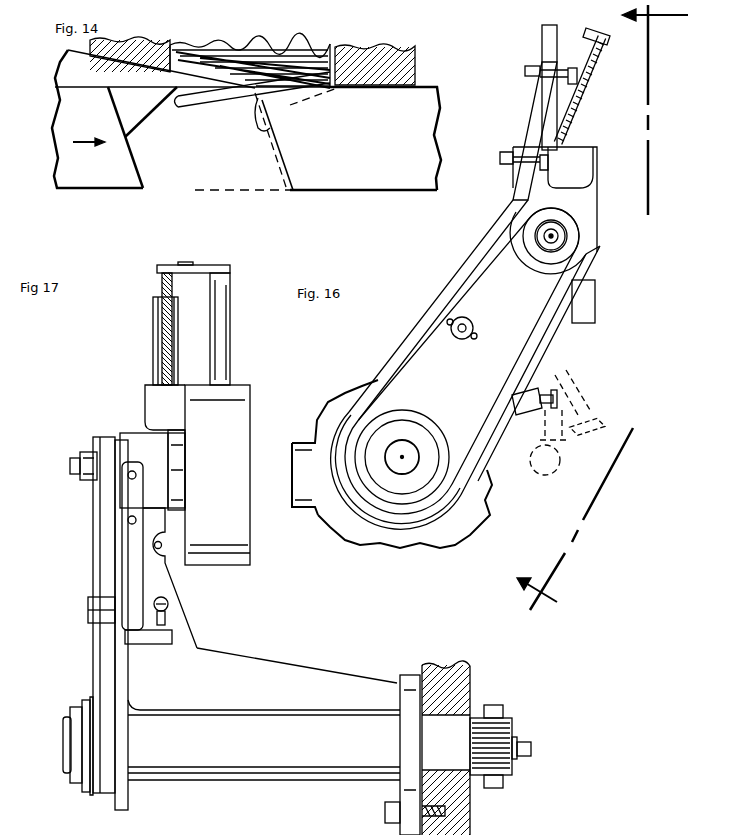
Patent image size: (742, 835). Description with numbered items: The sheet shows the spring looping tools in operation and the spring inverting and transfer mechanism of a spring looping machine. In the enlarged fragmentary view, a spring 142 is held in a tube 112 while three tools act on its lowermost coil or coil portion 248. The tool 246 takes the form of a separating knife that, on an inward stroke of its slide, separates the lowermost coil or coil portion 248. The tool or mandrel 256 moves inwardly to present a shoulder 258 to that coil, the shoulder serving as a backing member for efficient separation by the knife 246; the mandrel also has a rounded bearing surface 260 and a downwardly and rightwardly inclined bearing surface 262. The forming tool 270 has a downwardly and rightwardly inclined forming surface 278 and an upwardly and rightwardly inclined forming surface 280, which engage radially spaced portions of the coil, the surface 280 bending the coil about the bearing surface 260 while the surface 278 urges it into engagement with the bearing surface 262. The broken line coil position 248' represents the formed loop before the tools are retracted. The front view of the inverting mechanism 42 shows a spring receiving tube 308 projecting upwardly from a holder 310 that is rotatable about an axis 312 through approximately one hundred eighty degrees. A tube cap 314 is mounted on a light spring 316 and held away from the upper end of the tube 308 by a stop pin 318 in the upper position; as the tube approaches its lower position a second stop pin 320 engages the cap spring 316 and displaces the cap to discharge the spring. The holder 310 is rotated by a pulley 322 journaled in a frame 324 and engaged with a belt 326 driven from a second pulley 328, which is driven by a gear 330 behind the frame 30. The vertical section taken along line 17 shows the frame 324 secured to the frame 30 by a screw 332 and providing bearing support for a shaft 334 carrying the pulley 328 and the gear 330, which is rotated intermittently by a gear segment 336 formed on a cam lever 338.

In FIG. 16, the frame 30 is at (456, 545).
In FIG. 17, the frame 30 is at (450, 672).
In FIG. 16, the inverting mechanism 42 is at (650, 242).
In FIG. 17, the inverting mechanism 42 is at (86, 508).
In FIG. 14, the tube 112 is at (390, 60).
In FIG. 14, the spring 142 is at (312, 48).
In FIG. 14, the tool 246 is at (78, 72).
In FIG. 14, the lowermost coil or coil portion 248 is at (253, 102).
In FIG. 14, the coil or coil portion in formed loop position 248' is at (242, 203).
In FIG. 14, the tool or mandrel 256 is at (331, 192).
In FIG. 14, the shoulder 258 is at (314, 97).
In FIG. 14, the rounded bearing surface 260 is at (268, 126).
In FIG. 14, the inclined bearing surface 262 is at (283, 165).
In FIG. 14, the forming tool 270 is at (100, 175).
In FIG. 14, the forming surface 278 is at (140, 168).
In FIG. 14, the forming surface 280 is at (150, 124).
In FIG. 16, the section line 17— 17 is at (612, 311).
In FIG. 16, the spring receiving tube 308 is at (546, 46).
In FIG. 17, the spring receiving tube 308 is at (224, 352).
In FIG. 16, the holder 310 is at (587, 193).
In FIG. 17, the holder 310 is at (238, 411).
In FIG. 16, the axis 312 is at (551, 243).
In FIG. 17, the axis 312 is at (80, 470).
In FIG. 16, the tube cap 314 is at (583, 27).
In FIG. 17, the tube cap 314 is at (178, 265).
In FIG. 16, the light spring 316 is at (571, 108).
In FIG. 17, the light spring 316 is at (172, 356).
In FIG. 16, the stop pin 318 is at (531, 77).
In FIG. 17, the stop pin 318 is at (162, 328).
In FIG. 16, the second stop pin 320 is at (520, 414).
In FIG. 17, the second stop pin 320 is at (168, 600).
In FIG. 16, the pulley 322 is at (535, 238).
In FIG. 17, the pulley 322 is at (94, 443).
In FIG. 16, the frame 324 is at (460, 302).
In FIG. 17, the frame 324 is at (180, 652).
In FIG. 16, the belt 326 is at (468, 342).
In FIG. 17, the belt 326 is at (95, 648).
In FIG. 16, the second pulley 328 is at (403, 411).
In FIG. 17, the second pulley 328 is at (84, 795).
In FIG. 17, the gear 330 is at (500, 729).
In FIG. 17, the screw 332 is at (388, 812).
In FIG. 16, the shaft 334 is at (420, 456).
In FIG. 17, the shaft 334 is at (528, 748).
In FIG. 17, the gear segment 336 is at (490, 705).
In FIG. 16, the cam lever 338 is at (306, 500).